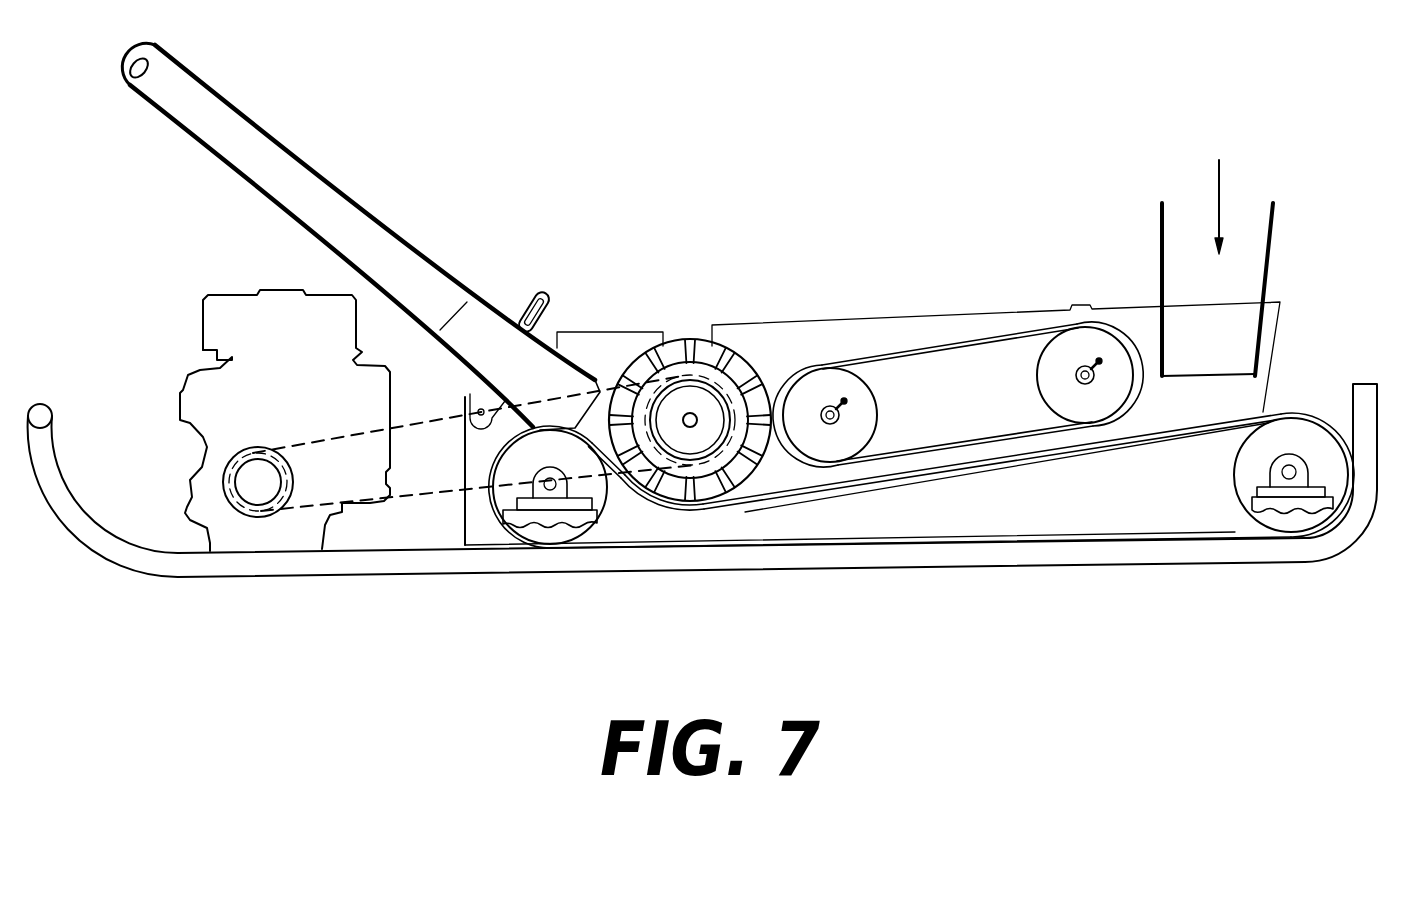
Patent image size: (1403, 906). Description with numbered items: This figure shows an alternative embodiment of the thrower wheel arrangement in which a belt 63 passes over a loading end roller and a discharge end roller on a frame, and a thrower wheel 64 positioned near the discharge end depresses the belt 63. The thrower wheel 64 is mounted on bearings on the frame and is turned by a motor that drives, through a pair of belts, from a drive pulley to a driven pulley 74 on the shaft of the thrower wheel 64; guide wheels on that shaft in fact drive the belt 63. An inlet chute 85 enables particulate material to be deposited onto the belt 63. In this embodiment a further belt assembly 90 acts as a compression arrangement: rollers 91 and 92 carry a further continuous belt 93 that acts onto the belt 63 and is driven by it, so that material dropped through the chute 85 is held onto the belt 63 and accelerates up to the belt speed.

The belt 63 is at (1097, 452).
The thrower wheel 64 is at (692, 365).
The driven pulley 74 is at (706, 400).
The inlet chute 85 is at (1251, 256).
The further belt assembly 90 is at (958, 332).
The roller 91 is at (807, 395).
The roller 92 is at (1092, 345).
The further continuous belt 93 is at (892, 350).